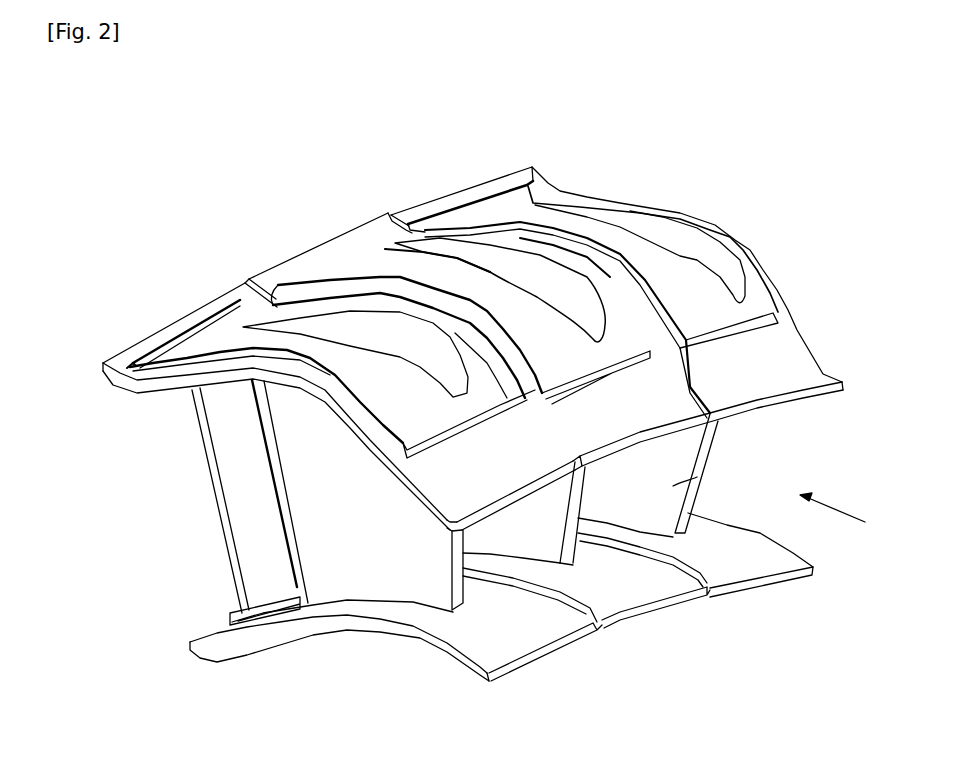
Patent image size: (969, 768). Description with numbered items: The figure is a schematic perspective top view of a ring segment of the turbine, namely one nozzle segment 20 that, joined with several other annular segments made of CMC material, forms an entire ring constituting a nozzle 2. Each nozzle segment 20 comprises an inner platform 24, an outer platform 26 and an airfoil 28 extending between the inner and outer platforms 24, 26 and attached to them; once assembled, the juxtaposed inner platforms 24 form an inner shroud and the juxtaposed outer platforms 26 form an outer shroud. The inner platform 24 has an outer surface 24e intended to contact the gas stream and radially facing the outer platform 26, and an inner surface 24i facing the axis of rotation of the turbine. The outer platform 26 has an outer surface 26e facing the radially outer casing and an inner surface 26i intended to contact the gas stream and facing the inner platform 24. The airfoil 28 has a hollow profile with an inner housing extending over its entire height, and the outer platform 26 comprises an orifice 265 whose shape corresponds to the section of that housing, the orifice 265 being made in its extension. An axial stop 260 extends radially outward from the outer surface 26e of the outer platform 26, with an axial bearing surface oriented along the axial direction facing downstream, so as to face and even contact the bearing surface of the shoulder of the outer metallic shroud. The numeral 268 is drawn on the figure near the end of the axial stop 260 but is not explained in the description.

The nozzle 2 is at (816, 193).
The nozzle segment 20 is at (220, 492).
The inner platform 24 is at (543, 650).
The outer surface of the inner platform 24e is at (218, 632).
The inner surface of the inner platform 24i is at (248, 658).
The outer platform 26 is at (750, 407).
The outer surface of the outer platform 26e is at (783, 368).
The inner surface of the outer platform 26i is at (807, 402).
The airfoil 28 is at (697, 477).
The axial stop 260 is at (190, 330).
The orifice of the outer platform 265 is at (490, 265).
The slot end 268 is at (133, 365).